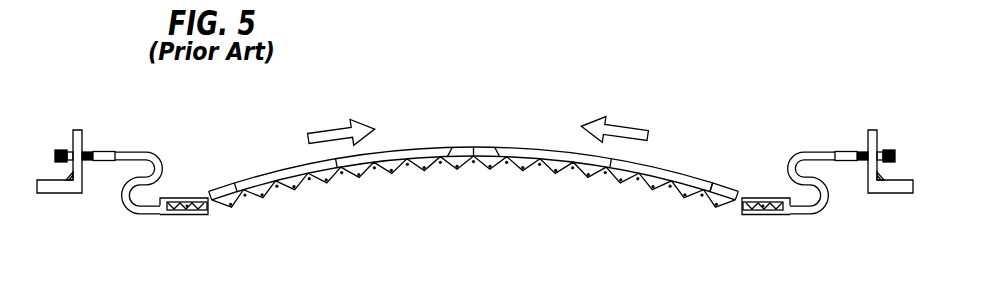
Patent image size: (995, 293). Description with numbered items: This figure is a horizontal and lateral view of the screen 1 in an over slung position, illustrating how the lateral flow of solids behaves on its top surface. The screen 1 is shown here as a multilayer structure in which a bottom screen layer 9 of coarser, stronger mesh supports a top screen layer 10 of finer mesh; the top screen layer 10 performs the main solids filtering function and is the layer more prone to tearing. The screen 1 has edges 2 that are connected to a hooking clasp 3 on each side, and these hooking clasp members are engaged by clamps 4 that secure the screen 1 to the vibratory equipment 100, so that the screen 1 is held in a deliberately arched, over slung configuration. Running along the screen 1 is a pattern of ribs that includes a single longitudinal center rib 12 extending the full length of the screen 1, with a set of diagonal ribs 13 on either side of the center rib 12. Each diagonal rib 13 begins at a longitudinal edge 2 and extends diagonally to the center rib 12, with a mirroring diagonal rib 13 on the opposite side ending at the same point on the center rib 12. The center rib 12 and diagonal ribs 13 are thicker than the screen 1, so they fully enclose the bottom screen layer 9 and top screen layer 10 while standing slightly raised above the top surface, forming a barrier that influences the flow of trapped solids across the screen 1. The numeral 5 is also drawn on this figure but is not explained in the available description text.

The screen 1 is at (333, 203).
The edges 2 is at (206, 196).
The hooking clasp 3 is at (152, 218).
The clamps 4 is at (138, 152).
The center connector 5 is at (474, 147).
The bottom screen layer 9 is at (474, 158).
The top screen layer 10 is at (671, 181).
The center rib 12 is at (477, 147).
The diagonal ribs 13 is at (340, 166).
The vibratory equipment 100 is at (45, 196).